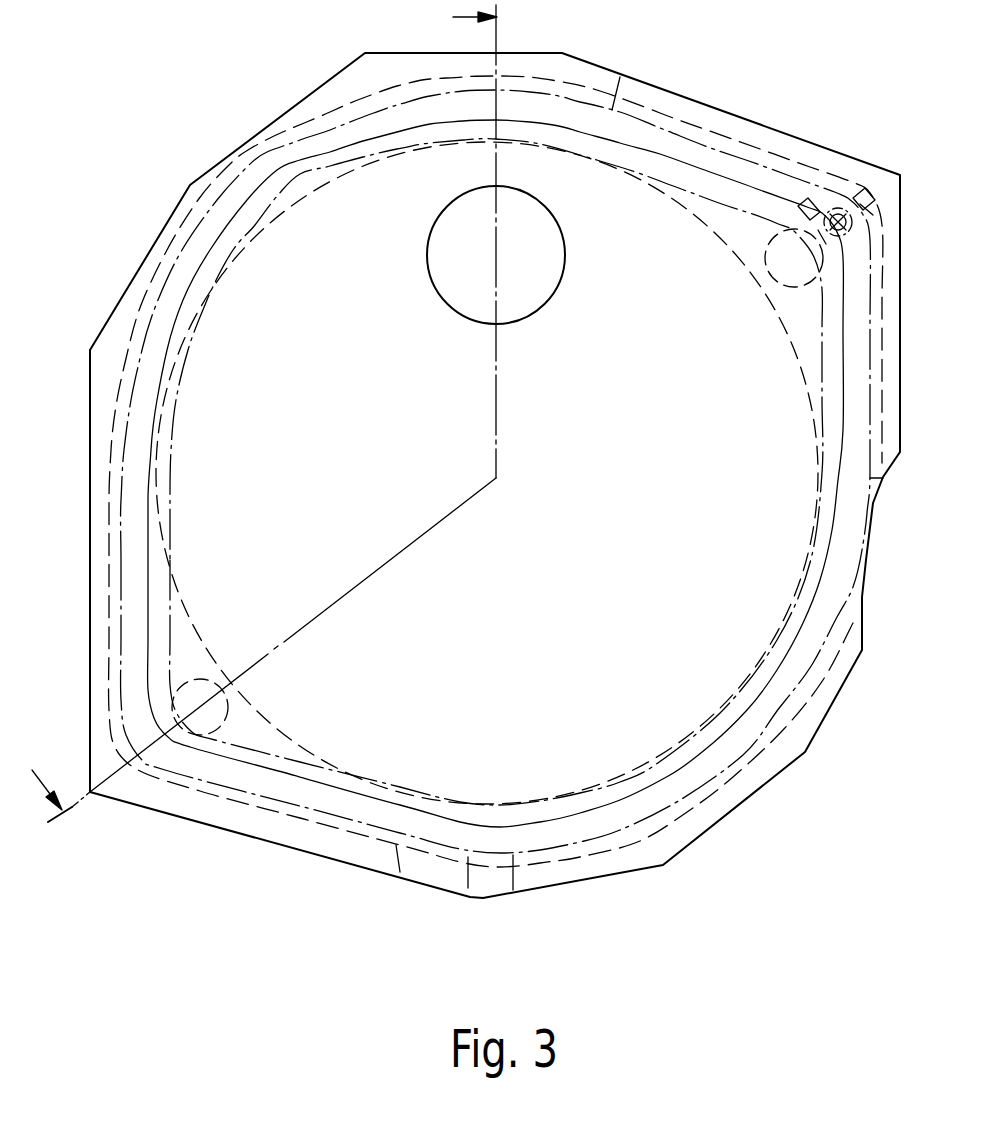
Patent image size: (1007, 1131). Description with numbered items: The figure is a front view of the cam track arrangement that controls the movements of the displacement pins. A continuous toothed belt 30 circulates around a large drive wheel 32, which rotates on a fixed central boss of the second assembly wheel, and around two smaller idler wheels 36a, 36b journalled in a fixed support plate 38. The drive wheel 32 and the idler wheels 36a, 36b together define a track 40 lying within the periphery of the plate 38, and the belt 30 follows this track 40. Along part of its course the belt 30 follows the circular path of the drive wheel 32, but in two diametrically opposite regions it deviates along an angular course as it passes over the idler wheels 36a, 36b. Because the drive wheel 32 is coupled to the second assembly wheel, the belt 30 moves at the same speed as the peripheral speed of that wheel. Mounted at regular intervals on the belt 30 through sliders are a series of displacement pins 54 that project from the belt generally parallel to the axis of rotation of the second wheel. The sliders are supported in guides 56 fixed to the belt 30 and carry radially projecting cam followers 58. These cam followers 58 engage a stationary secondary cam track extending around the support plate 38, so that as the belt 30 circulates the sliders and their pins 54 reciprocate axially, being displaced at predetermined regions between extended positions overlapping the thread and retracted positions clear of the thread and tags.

The continuous toothed belt 30 is at (822, 368).
The drive wheel 32 is at (711, 222).
The idler wheel 36a is at (767, 260).
The idler wheel 36b is at (210, 688).
The support plate 38 is at (553, 617).
The track 40 is at (297, 135).
The displacement pin 54 is at (833, 247).
The guide 56 is at (833, 197).
The cam follower 58 is at (870, 203).